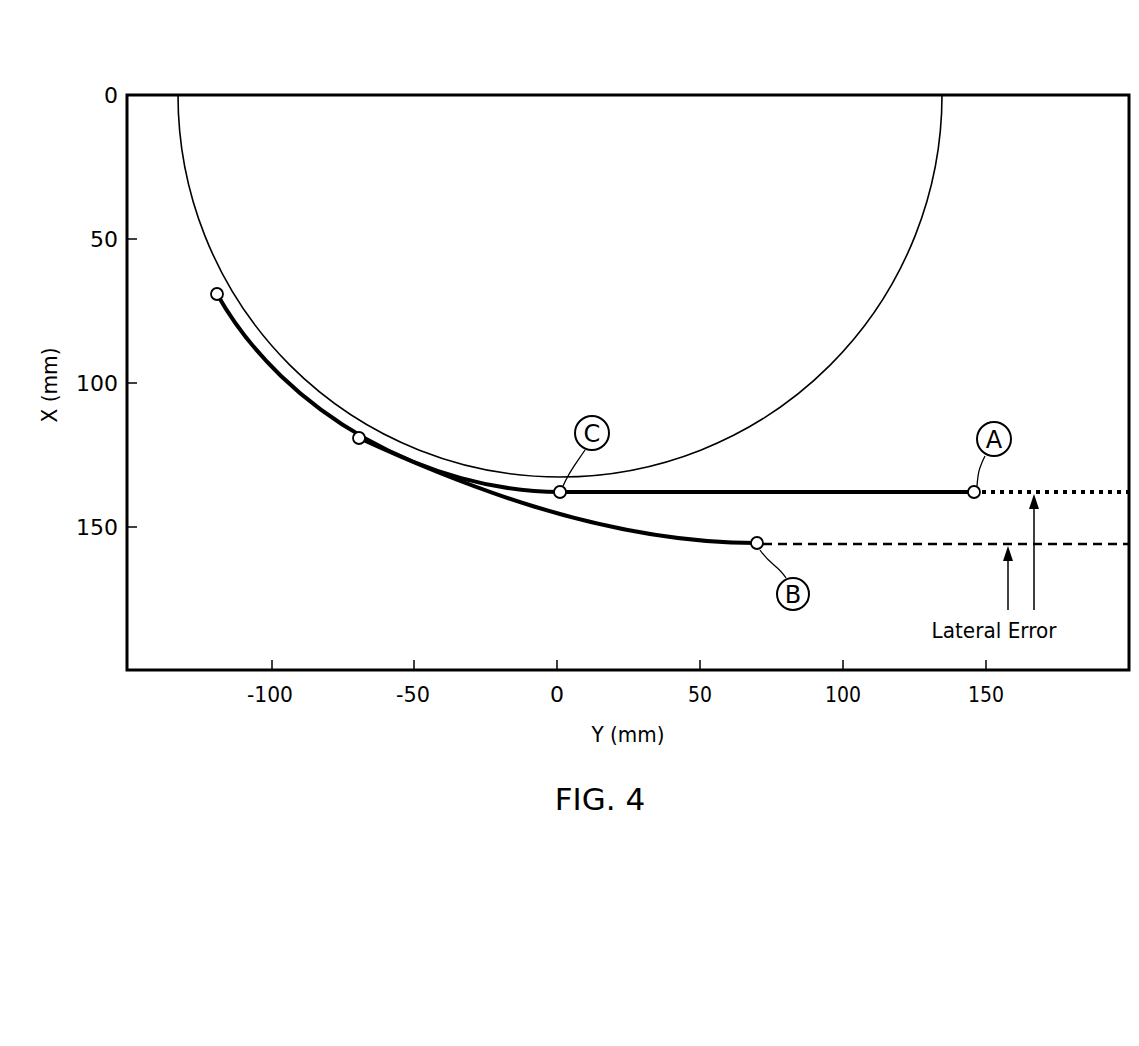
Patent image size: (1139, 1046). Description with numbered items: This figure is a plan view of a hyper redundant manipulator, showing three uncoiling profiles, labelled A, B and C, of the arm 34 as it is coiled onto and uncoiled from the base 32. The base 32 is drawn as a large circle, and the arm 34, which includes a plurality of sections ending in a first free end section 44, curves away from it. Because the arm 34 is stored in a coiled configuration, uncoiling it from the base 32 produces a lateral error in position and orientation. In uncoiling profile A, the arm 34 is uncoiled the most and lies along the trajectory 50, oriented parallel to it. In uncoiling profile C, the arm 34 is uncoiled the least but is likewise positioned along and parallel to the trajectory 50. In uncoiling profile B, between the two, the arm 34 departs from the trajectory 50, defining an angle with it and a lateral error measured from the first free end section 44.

The base 32 is at (571, 189).
The arm 34 is at (297, 394).
The first free end section 44 is at (507, 488).
The trajectory 50 is at (1060, 490).